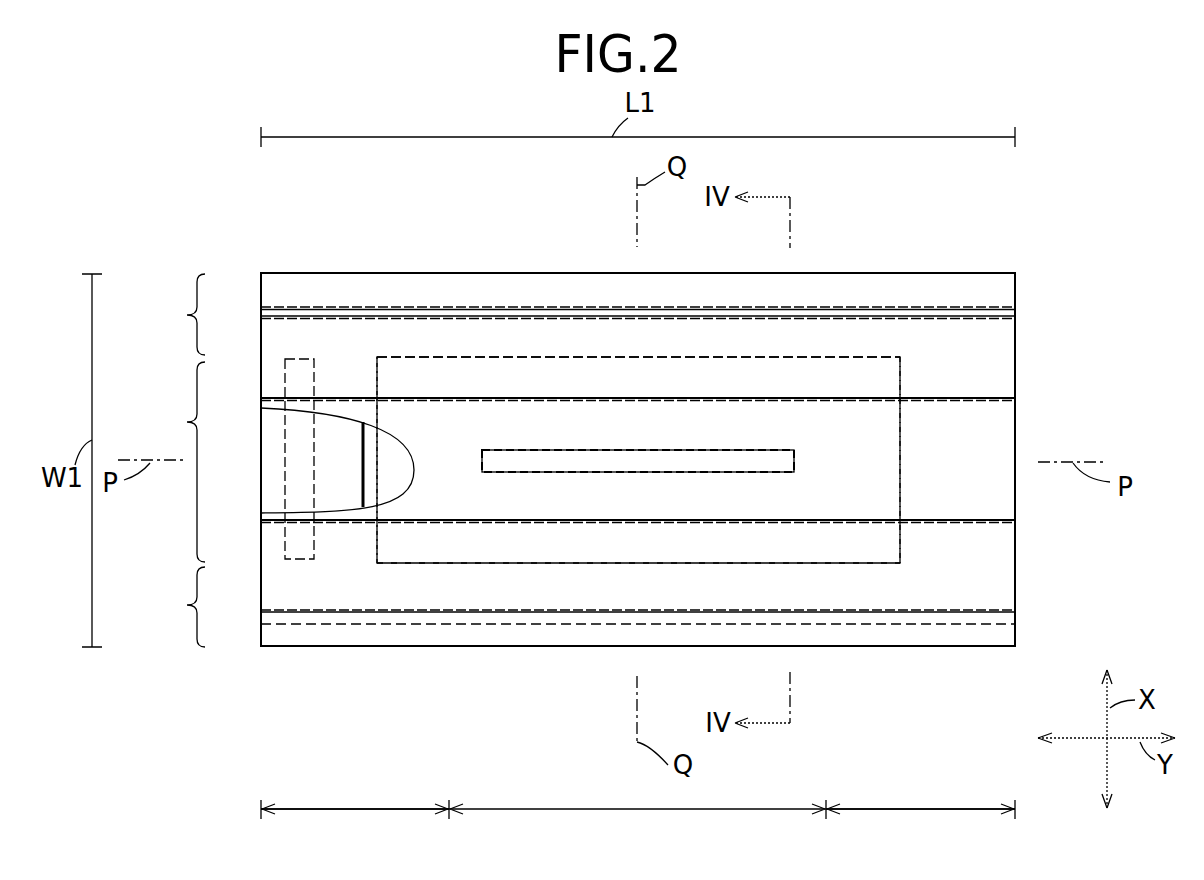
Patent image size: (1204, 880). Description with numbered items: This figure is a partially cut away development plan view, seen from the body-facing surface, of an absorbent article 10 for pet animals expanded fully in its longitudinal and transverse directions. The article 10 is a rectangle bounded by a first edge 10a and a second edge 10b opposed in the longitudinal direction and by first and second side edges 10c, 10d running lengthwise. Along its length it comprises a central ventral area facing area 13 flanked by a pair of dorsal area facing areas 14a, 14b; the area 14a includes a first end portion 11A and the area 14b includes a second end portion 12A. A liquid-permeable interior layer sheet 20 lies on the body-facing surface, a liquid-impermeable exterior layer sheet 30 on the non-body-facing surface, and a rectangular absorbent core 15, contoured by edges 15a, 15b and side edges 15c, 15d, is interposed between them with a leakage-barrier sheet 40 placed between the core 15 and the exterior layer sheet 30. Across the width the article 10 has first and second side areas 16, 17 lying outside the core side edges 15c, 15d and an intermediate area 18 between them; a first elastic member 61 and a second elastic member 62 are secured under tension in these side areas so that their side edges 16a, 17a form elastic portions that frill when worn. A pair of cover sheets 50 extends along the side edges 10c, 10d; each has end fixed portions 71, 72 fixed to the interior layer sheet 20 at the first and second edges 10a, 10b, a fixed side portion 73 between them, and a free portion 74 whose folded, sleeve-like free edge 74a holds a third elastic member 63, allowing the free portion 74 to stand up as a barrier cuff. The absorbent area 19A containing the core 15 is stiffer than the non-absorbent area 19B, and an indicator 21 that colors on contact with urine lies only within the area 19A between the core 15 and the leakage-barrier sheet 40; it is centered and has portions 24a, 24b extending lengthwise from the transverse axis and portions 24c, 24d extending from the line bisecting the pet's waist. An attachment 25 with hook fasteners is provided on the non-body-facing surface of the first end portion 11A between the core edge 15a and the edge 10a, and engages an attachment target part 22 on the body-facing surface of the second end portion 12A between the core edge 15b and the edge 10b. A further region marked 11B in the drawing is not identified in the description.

The absorbent article 10 is at (1003, 233).
The first edge 10a is at (261, 338).
The second edge 10b is at (1017, 548).
The first side edge 10c is at (528, 647).
The second side edge 10d is at (485, 272).
The first end portion 11A is at (264, 425).
The second region 11B is at (295, 330).
The second end portion 12A is at (993, 584).
The ventral area facing area 13 is at (634, 810).
The dorsal area facing area 14a is at (352, 810).
The dorsal area facing area 14b is at (920, 810).
The absorbent core 15 is at (393, 473).
The edge of absorbent core 15a is at (380, 440).
The edge of absorbent core 15b is at (901, 441).
The side edge of absorbent core 15c is at (791, 563).
The side edge of absorbent core 15d is at (815, 357).
The first side area 16 is at (178, 607).
The side edge of first side area 16a is at (837, 637).
The second side area 17 is at (178, 314).
The side edge of second side area 17a is at (898, 290).
The intermediate area 18 is at (178, 462).
The absorbent area 19A is at (748, 388).
The non-absorbent area 19B is at (962, 587).
The liquid-permeable interior layer sheet 20 is at (492, 495).
The indicator 21 is at (580, 472).
The attachment target part 22 is at (995, 417).
The portion of indicator 24a is at (577, 449).
The portion of indicator 24b is at (688, 448).
The portion of indicator 24c is at (483, 455).
The portion of indicator 24d is at (796, 473).
The attachment 25 is at (293, 565).
The liquid-impermeable exterior layer sheet 30 is at (266, 460).
The leakage-barrier sheet 40 is at (369, 505).
The cover sheet 50 is at (842, 290).
The first elastic member 61 is at (684, 625).
The second elastic member 62 is at (392, 303).
The third elastic member 63 is at (712, 399).
The end fixed portion 71 is at (337, 330).
The end fixed portion 72 is at (997, 350).
The fixed side portion 73 is at (580, 300).
The free portion 74 is at (597, 378).
The free edge 74a is at (832, 402).